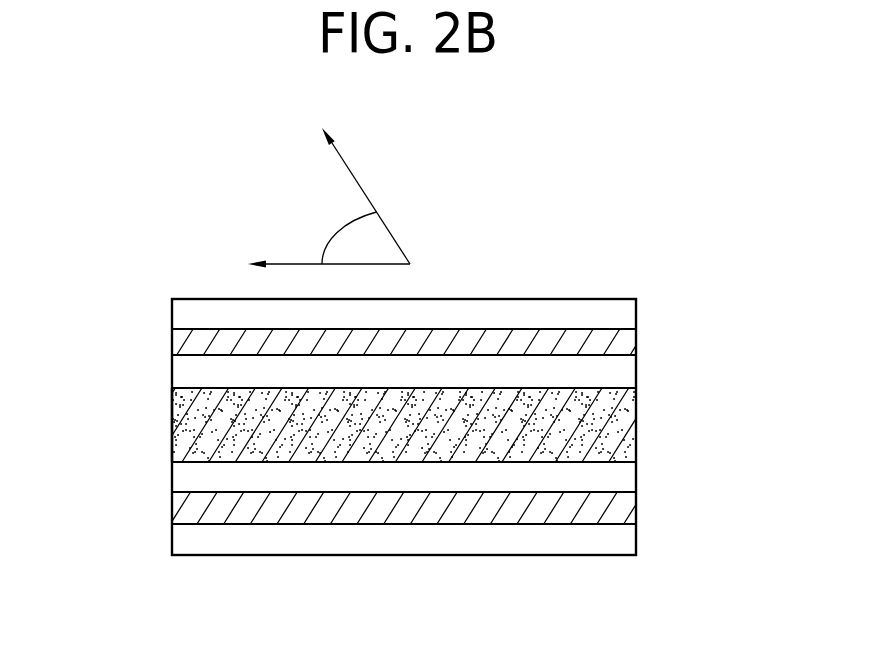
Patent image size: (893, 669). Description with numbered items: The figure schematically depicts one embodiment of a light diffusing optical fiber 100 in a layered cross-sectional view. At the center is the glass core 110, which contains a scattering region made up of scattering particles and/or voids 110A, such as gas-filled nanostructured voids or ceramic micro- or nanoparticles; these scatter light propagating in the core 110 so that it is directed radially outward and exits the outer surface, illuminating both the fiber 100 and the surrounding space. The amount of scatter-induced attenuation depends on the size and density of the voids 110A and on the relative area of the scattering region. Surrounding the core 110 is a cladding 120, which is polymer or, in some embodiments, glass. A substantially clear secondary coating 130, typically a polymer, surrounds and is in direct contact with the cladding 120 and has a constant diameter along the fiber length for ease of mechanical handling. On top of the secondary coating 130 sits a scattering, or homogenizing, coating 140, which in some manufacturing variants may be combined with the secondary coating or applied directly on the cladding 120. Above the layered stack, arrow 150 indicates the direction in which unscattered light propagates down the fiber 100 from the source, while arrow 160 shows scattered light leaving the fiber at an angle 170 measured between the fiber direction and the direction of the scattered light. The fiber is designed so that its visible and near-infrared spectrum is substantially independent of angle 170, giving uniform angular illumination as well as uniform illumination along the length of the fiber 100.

The light diffusing optical fiber 100 is at (565, 231).
The core 110 is at (625, 428).
The scattering particles and/or voids 110A is at (185, 429).
The cladding 120 is at (620, 368).
The secondary coating 130 is at (622, 342).
The scattering coating 140 is at (617, 315).
The direction of unscattered light 150 is at (302, 258).
The scattered light 160 is at (366, 194).
The angle 170 is at (338, 218).